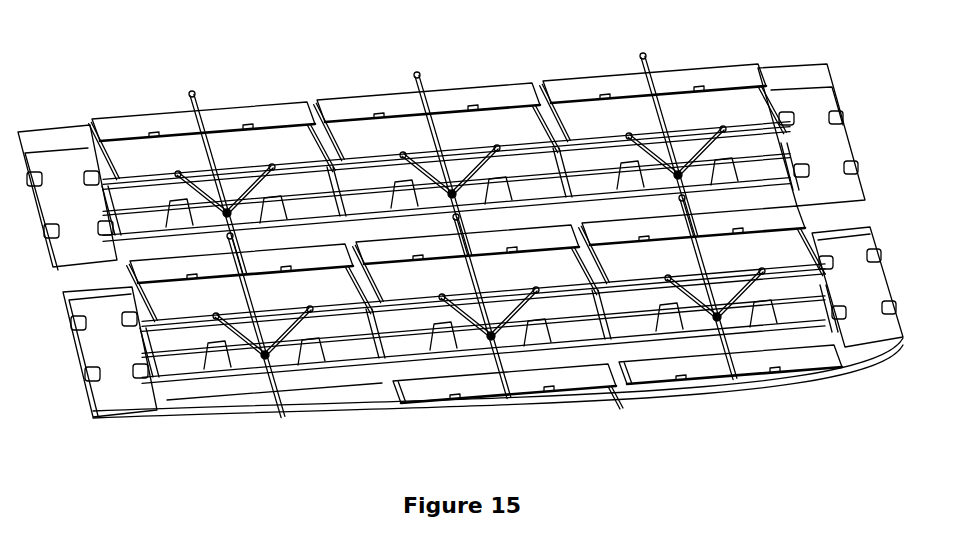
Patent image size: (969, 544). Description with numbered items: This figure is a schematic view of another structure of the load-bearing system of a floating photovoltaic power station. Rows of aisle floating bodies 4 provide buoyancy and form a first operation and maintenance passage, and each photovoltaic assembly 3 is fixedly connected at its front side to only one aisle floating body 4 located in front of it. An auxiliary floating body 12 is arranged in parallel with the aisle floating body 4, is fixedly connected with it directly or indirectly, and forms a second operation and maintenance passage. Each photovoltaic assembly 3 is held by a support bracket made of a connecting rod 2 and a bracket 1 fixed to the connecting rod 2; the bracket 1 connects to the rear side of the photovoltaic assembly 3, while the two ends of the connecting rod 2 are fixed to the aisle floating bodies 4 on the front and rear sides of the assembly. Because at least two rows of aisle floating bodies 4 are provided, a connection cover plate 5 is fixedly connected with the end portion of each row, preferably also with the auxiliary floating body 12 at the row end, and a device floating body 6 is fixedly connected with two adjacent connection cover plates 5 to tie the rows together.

The bracket 1 is at (225, 122).
The connecting rod 2 is at (195, 151).
The photovoltaic assembly 3 is at (223, 103).
The aisle floating body 4 is at (437, 93).
The connection cover plate 5 is at (796, 77).
The device floating body 6 is at (813, 140).
The auxiliary floating body 12 is at (578, 165).